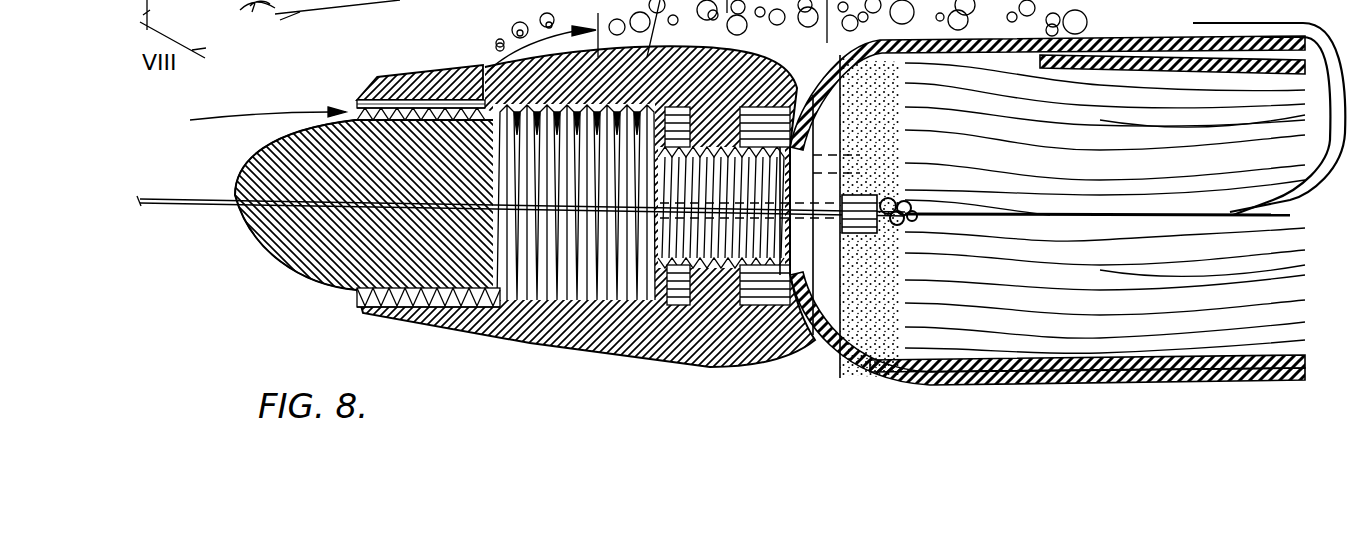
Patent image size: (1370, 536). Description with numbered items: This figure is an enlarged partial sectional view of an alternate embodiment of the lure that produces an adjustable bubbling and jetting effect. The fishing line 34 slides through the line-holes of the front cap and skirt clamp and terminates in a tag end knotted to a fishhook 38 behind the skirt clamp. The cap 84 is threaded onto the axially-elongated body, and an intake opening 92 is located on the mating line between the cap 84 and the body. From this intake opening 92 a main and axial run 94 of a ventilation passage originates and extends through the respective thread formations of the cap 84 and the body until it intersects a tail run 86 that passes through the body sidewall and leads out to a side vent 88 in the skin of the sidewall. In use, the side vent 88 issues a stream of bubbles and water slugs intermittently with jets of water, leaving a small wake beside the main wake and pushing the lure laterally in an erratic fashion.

The fishing line 34 is at (140, 200).
The fishhook 38 is at (1193, 23).
The cap 84 is at (250, 160).
The tail run 86 is at (490, 77).
The side vent 88 is at (488, 72).
The intake opening 92 is at (357, 113).
The main and axial run 94 is at (377, 80).